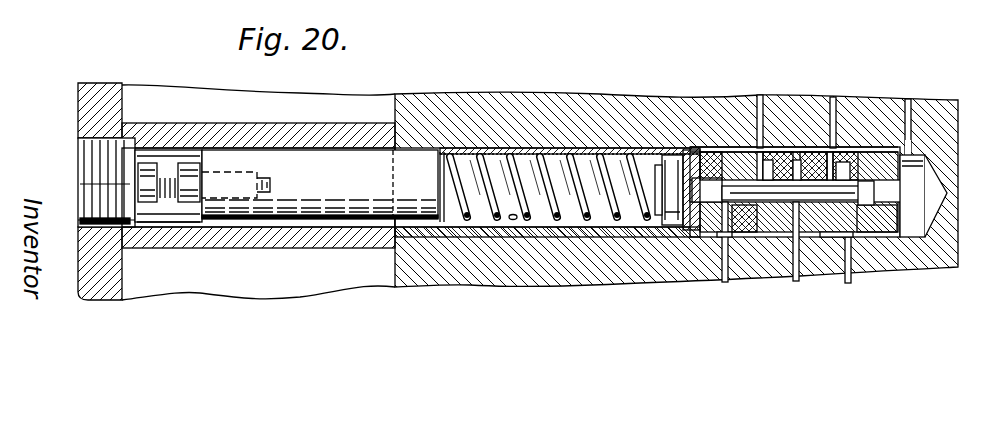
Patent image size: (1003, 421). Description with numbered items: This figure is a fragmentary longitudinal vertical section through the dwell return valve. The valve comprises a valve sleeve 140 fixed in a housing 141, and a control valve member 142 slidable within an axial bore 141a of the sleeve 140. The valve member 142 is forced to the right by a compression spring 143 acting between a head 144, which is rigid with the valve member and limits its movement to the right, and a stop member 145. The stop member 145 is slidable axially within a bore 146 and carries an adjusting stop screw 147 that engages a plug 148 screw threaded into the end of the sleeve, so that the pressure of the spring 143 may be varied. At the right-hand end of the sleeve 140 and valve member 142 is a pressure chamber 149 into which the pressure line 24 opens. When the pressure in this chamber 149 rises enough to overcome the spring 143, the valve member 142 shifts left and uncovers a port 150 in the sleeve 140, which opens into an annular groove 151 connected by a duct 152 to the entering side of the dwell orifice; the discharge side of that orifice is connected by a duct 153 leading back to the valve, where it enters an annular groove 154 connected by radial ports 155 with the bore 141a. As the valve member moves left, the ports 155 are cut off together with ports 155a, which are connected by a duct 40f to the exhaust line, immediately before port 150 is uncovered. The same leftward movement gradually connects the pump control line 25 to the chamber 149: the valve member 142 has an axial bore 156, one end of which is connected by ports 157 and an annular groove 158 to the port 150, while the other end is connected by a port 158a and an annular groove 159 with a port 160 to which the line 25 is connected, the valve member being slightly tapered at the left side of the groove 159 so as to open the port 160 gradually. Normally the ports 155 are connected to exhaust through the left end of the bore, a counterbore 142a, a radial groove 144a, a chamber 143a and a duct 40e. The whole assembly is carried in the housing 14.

The housing 14 is at (615, 90).
The pressure line 24 is at (910, 97).
The pump control line 25 is at (760, 93).
The duct 40e is at (513, 220).
The duct 40f is at (796, 280).
The valve sleeve 140 is at (877, 272).
The housing 141 is at (923, 268).
The axial bore 141a is at (682, 150).
The control valve member 142 is at (741, 178).
The counterbore 142a is at (660, 232).
The compression spring 143 is at (548, 213).
The chamber 143a is at (472, 230).
The head 144 is at (666, 145).
The radial groove 144a is at (694, 235).
The stop member 145 is at (350, 162).
The bore 146 is at (275, 142).
The adjusting stop screw 147 is at (177, 172).
The plug 148 is at (127, 158).
The pressure chamber 149 is at (918, 160).
The port 150 is at (842, 165).
The annular groove 151 is at (847, 283).
The duct 152 is at (836, 98).
The duct 153 is at (727, 280).
The annular groove 154 is at (712, 240).
The radial ports 155 is at (704, 152).
The ports 155a is at (806, 150).
The axial bore 156 is at (808, 176).
The ports 157 is at (829, 237).
The annular groove 158 is at (848, 163).
The port 158a is at (786, 160).
The annular groove 159 is at (738, 215).
The port 160 is at (783, 140).